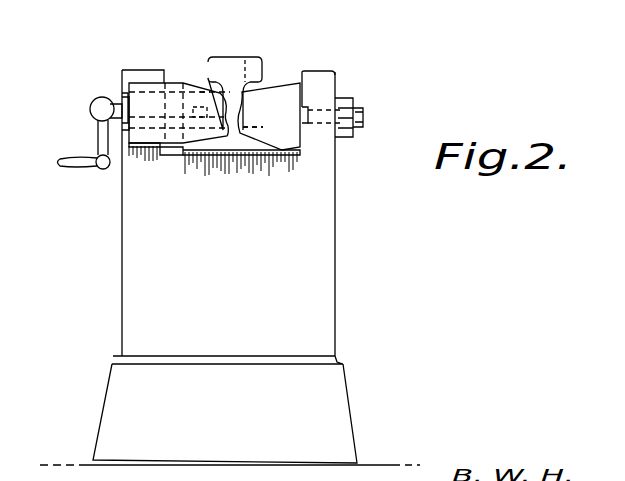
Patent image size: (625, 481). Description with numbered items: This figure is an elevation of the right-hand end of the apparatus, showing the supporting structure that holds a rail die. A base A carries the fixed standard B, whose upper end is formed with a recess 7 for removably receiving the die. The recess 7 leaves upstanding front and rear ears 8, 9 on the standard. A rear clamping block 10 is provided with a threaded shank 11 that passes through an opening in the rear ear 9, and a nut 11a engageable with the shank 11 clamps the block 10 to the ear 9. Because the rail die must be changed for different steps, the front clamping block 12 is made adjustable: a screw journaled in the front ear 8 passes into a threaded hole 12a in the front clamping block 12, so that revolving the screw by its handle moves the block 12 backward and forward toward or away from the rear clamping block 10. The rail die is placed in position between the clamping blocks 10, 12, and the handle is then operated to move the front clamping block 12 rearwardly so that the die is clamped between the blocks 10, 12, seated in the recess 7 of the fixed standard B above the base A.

The front ear 8 is at (135, 70).
The front clamping block 12 is at (192, 85).
The threaded hole 12a is at (202, 140).
The rear clamping block 10 is at (270, 100).
The recess 7 is at (292, 78).
The rear ear 9 is at (322, 71).
The nut 11a is at (353, 103).
The threaded shank 11 is at (363, 118).
The fixed standard B is at (321, 258).
The base A is at (322, 417).